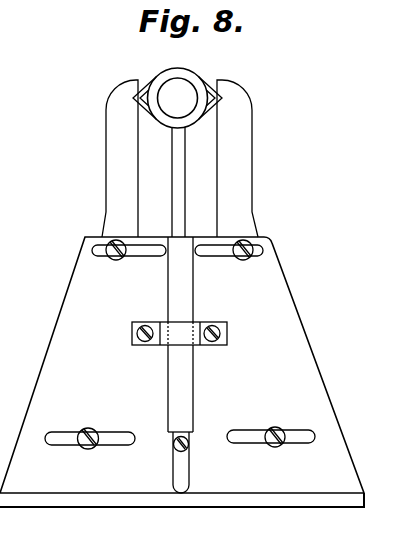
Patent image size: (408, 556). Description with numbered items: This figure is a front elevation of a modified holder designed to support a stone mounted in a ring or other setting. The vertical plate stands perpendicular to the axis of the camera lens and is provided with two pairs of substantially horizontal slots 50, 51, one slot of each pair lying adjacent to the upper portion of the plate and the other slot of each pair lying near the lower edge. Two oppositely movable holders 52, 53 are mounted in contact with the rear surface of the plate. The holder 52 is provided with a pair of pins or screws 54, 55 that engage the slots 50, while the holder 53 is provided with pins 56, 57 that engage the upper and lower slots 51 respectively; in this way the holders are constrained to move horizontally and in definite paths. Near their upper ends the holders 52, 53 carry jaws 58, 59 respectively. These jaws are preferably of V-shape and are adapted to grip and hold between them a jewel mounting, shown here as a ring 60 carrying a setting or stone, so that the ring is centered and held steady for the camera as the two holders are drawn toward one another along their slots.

The slots 50 is at (223, 256).
The slots 51 is at (103, 258).
The holder 52 is at (253, 178).
The holder 53 is at (115, 167).
The pin or screw 54 is at (250, 259).
The pin or screw 55 is at (273, 427).
The pin 56 is at (106, 246).
The pin 57 is at (87, 428).
The jaw 58 is at (215, 89).
The jaw 59 is at (142, 89).
The ring 60 is at (178, 68).